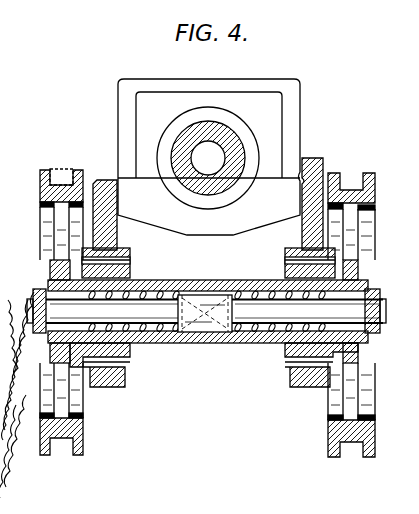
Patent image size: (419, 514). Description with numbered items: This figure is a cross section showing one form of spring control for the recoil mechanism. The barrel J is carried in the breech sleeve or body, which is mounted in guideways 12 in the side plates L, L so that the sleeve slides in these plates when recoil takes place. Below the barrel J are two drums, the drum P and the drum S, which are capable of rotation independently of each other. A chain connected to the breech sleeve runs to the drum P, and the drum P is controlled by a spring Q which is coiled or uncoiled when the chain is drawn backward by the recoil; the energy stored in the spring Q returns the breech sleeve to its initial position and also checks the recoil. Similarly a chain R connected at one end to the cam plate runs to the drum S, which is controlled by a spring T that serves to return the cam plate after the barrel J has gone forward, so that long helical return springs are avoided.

The barrel J is at (217, 127).
The side plates L is at (98, 172).
The spring T is at (159, 344).
The spring Q is at (246, 342).
The drum S is at (40, 172).
The chain R is at (62, 168).
The drum P is at (376, 186).
The guideways 12 is at (56, 207).